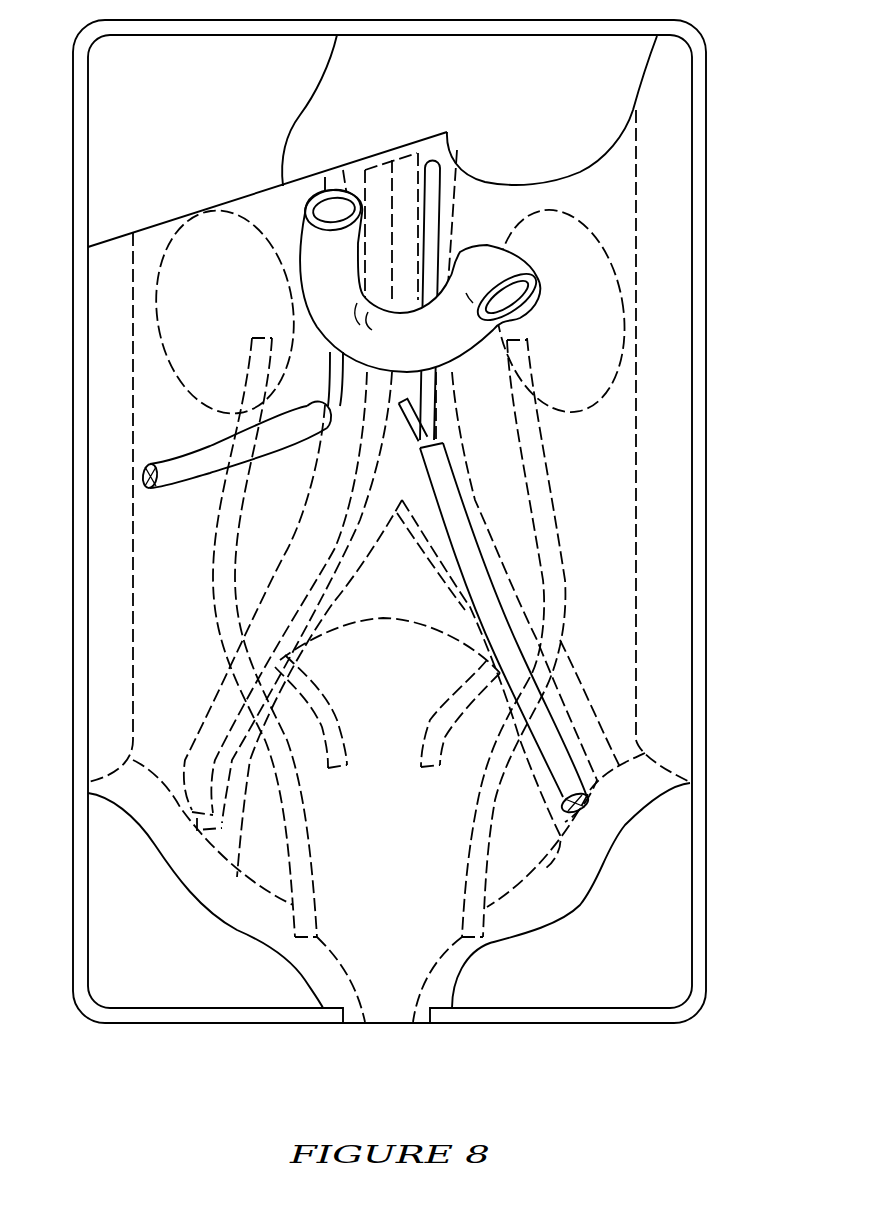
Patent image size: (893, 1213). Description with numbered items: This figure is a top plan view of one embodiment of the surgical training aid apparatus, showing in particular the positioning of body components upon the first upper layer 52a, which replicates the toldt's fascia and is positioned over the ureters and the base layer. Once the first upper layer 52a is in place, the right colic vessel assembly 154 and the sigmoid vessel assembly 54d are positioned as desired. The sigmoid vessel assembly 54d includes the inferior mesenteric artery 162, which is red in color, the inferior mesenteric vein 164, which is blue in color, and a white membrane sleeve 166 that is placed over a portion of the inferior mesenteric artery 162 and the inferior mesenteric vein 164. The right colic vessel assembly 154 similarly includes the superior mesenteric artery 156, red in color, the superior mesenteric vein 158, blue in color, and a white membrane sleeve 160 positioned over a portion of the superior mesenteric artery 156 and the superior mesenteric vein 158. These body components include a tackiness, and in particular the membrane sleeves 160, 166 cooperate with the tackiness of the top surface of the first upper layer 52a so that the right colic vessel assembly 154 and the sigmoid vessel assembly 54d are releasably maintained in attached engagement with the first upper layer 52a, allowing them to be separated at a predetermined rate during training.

The first upper layer 52a is at (627, 238).
The right colic vessel assembly 154 is at (175, 480).
The superior mesenteric artery 156 is at (333, 368).
The superior mesenteric vein 158 is at (337, 400).
The membrane sleeve 160 is at (140, 480).
The inferior mesenteric artery 162 is at (433, 418).
The inferior mesenteric vein 164 is at (415, 437).
The sigmoid vessel assembly 54d is at (497, 625).
The membrane sleeve 166 is at (550, 772).